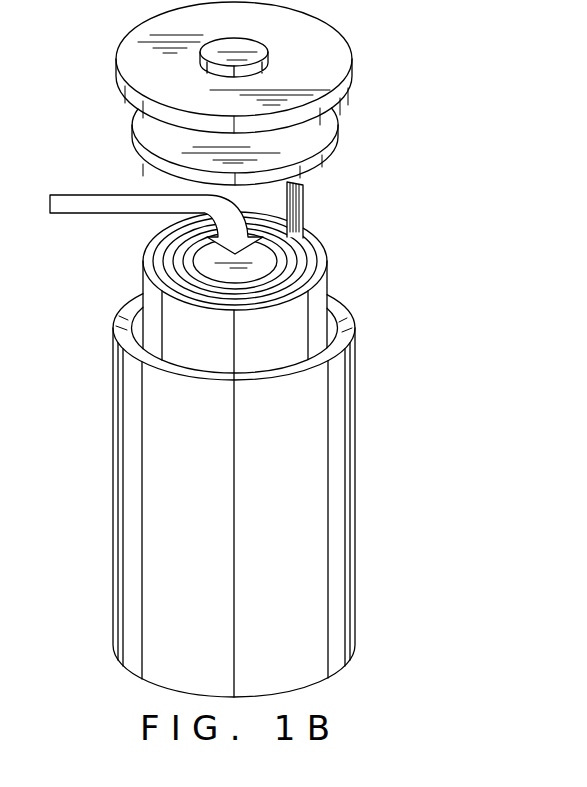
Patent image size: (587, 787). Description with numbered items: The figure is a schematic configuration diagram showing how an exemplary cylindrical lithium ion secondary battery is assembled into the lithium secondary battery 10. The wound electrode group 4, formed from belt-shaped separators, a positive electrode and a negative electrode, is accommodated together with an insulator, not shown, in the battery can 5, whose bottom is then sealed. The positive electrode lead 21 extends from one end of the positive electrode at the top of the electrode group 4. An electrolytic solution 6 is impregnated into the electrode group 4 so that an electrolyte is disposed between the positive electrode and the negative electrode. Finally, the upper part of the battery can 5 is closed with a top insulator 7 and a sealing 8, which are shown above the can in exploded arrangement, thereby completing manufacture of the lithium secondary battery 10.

The lithium secondary battery 10 is at (277, 349).
The battery can 5 is at (153, 503).
The electrode group 4 is at (152, 310).
The positive electrode lead 21 is at (303, 197).
The electrolytic solution 6 is at (73, 205).
The top insulator 7 is at (338, 127).
The sealing 8 is at (338, 53).